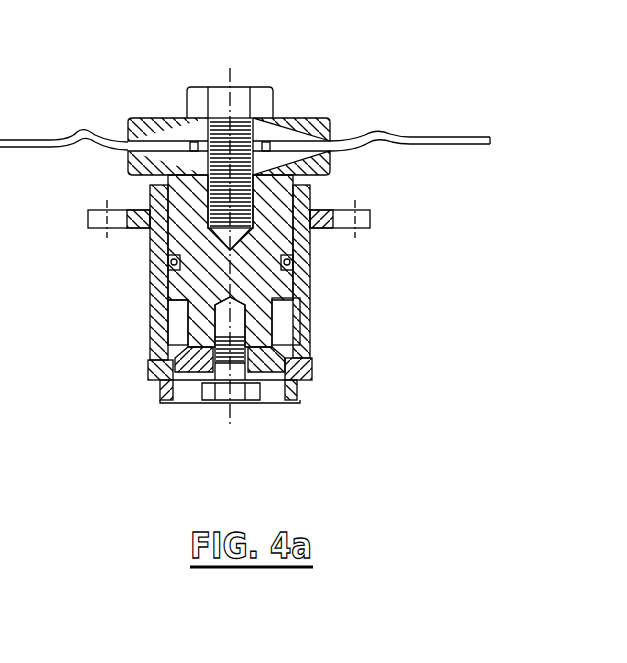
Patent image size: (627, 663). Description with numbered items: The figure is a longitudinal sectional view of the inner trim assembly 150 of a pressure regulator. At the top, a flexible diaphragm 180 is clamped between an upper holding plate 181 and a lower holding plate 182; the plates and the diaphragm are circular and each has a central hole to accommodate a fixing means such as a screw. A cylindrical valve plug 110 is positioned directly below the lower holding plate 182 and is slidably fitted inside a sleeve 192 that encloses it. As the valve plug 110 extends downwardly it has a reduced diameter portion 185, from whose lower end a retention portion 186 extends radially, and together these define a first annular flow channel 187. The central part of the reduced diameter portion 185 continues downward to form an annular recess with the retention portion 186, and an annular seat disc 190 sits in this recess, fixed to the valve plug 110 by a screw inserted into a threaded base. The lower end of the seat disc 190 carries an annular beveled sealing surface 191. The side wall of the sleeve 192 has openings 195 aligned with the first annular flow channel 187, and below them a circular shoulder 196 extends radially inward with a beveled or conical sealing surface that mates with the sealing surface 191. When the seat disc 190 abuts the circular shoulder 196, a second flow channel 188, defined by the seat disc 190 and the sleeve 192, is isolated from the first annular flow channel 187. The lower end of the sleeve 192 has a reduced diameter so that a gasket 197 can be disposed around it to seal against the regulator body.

The inner trim assembly 150 is at (337, 55).
The flexible diaphragm 180 is at (450, 138).
The upper holding plate 181 is at (313, 118).
The lower holding plate 182 is at (332, 166).
The valve plug 110 is at (322, 236).
The sleeve 192 is at (150, 262).
The reduced diameter portion 185 is at (168, 302).
The openings 195 is at (305, 326).
The first annular flow channel 187 is at (168, 332).
The retention portion 186 is at (305, 350).
The second flow channel 188 is at (148, 373).
The annular seat disc 190 is at (313, 367).
The gasket 197 is at (160, 390).
The circular shoulder 196 is at (314, 378).
The annular beveled sealing surface 191 is at (300, 403).